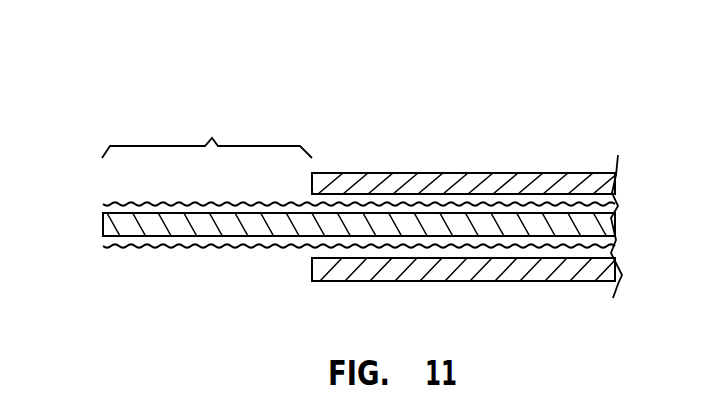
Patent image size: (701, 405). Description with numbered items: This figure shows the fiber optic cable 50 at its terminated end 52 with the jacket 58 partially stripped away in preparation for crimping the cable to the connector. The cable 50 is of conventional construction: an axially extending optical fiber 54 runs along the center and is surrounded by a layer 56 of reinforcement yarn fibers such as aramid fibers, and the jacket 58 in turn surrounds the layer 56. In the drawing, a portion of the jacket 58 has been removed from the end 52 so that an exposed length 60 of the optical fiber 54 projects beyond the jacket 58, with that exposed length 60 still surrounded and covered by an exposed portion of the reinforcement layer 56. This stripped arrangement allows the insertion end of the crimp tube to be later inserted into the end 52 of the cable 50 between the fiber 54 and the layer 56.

The fiber optic cable 50 is at (554, 134).
The terminated end 52 is at (106, 250).
The optical fiber 54 is at (103, 228).
The layer of reinforcement yarn fibers 56 is at (103, 202).
The jacket 58 is at (427, 172).
The exposed length 60 is at (207, 134).